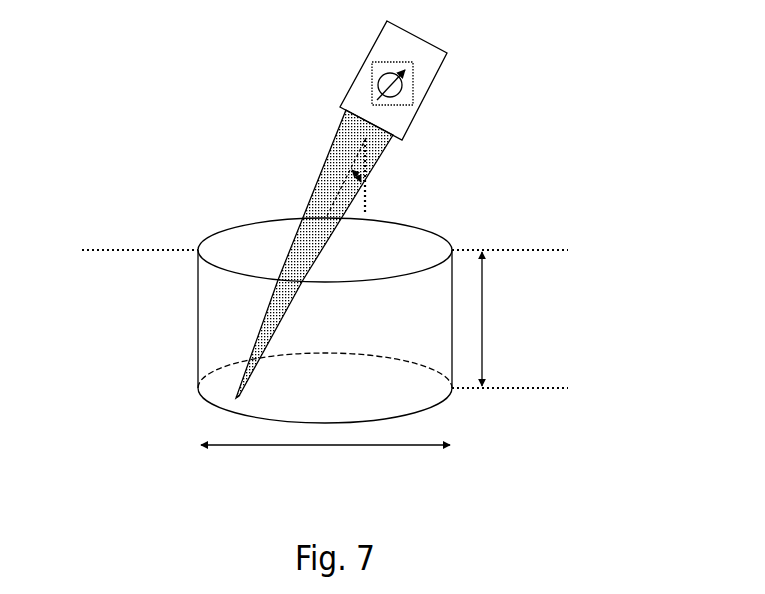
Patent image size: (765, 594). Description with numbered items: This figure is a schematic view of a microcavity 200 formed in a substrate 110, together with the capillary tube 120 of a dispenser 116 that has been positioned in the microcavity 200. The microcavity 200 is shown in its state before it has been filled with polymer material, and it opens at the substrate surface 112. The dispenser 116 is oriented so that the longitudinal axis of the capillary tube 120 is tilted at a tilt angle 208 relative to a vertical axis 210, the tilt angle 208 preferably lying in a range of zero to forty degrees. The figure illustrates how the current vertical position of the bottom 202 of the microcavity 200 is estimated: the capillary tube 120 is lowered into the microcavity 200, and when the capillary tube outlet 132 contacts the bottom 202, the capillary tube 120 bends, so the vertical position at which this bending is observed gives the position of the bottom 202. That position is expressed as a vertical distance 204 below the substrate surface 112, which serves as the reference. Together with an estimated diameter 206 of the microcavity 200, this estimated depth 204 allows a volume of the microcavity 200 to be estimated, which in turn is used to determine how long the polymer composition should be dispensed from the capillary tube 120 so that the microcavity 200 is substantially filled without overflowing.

The substrate 110 is at (137, 291).
The substrate surface 112 is at (122, 248).
The dispenser 116 is at (434, 92).
The capillary tube 120 is at (342, 145).
The capillary tube outlet 132 is at (245, 397).
The microcavity 200 is at (240, 205).
The bottom 202 is at (370, 402).
The vertical distance 204 is at (489, 333).
The estimated diameter 206 is at (242, 449).
The tilt angle 208 is at (354, 185).
The vertical axis 210 is at (369, 200).